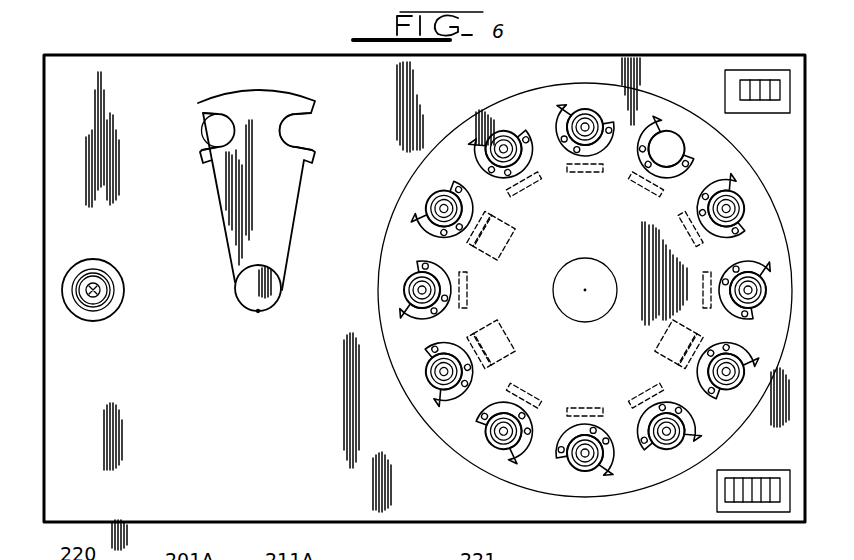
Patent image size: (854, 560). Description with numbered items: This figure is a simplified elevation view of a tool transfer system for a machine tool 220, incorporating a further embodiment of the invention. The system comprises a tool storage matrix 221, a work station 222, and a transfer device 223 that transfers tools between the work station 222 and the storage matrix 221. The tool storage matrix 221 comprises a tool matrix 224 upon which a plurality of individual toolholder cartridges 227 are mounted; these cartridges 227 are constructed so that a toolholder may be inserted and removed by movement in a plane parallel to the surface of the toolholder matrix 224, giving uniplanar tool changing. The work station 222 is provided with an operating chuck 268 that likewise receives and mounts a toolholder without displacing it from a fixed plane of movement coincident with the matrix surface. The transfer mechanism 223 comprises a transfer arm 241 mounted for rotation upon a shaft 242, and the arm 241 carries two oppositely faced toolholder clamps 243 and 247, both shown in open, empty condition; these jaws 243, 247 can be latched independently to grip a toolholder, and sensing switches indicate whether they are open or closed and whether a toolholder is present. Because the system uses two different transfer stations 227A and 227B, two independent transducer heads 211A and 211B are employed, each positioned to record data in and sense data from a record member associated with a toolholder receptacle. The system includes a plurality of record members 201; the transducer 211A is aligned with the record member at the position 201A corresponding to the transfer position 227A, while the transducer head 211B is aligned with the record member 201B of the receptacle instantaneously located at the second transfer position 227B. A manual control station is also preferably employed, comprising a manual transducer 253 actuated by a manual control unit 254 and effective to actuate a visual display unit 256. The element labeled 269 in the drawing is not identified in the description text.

The machine tool 220 is at (576, 48).
The tool storage matrix 221 is at (468, 485).
The work station 222 is at (112, 262).
The transfer device 223 is at (258, 318).
The tool matrix 224 is at (458, 440).
The toolholder cartridges 227 is at (566, 460).
The first transfer station 227A is at (472, 205).
The second transfer station 227B is at (472, 375).
The record members 201 is at (634, 183).
The record member position 201A is at (512, 237).
The record member at second transfer position 201B is at (482, 330).
The transducer head 211A is at (505, 255).
The transducer head 211B is at (506, 333).
The transfer arm 241 is at (292, 229).
The shaft 242 is at (250, 306).
The toolholder clamp 243 is at (297, 133).
The toolholder clamp 247 is at (216, 127).
The manual transducer 253 is at (660, 353).
The manual control unit 254 is at (783, 450).
The visual display unit 256 is at (722, 86).
The operating chuck 268 is at (118, 303).
The holder hub 269 is at (88, 303).